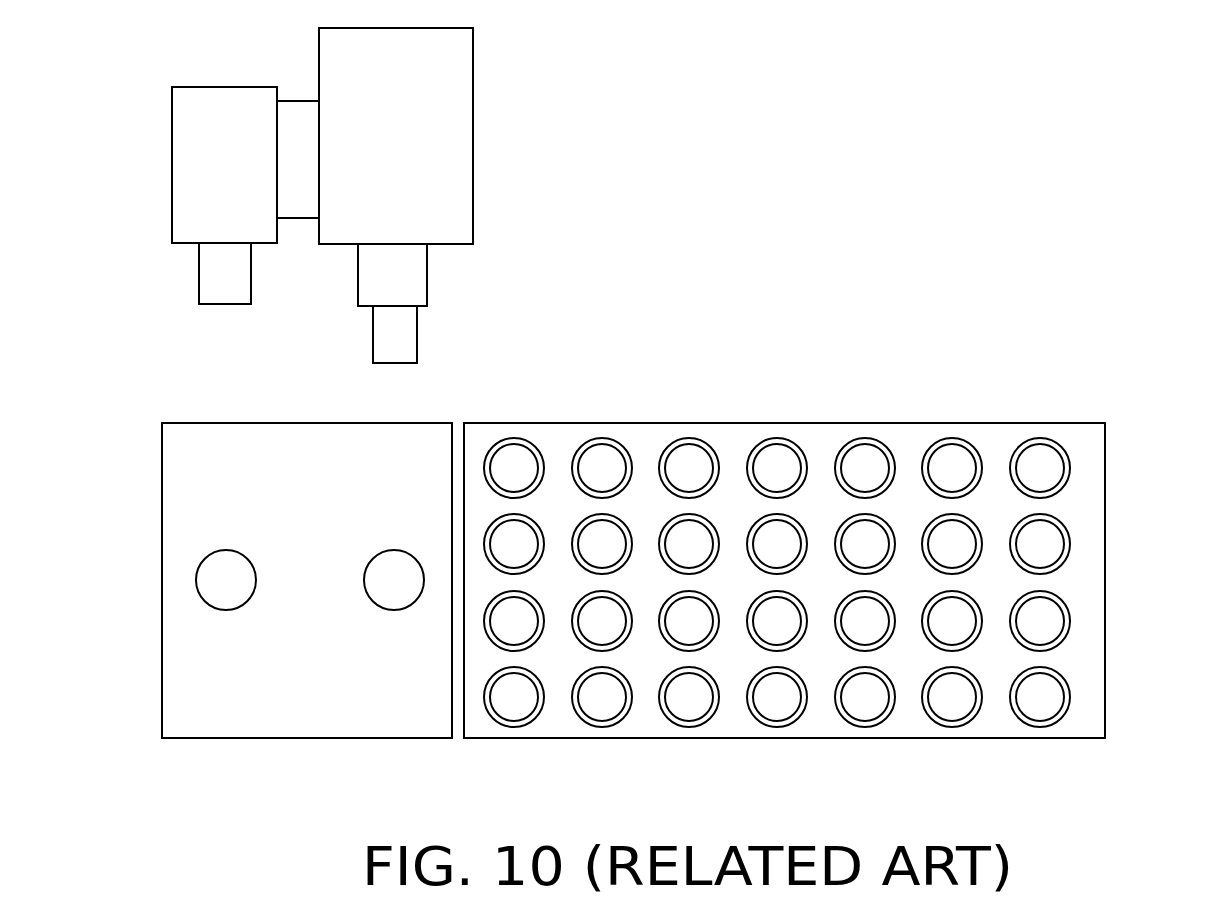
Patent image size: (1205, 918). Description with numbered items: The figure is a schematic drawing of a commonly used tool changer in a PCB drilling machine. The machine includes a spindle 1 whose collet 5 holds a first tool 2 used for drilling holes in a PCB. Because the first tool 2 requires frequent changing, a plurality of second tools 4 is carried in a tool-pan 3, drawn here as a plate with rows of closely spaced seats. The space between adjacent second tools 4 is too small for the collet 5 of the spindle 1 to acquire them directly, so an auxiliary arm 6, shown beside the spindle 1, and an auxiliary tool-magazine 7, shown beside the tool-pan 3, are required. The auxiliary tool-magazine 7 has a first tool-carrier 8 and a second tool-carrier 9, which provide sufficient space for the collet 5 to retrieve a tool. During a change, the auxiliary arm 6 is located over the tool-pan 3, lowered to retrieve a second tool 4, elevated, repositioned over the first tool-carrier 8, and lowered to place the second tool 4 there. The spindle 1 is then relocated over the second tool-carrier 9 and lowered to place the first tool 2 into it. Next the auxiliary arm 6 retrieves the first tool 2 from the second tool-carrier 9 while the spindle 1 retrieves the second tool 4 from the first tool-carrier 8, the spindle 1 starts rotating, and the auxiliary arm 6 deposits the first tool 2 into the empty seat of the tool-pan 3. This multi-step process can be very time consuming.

The spindle 1 is at (433, 163).
The first tool 2 is at (403, 340).
The tool-pan 3 is at (1082, 510).
The second tool 4 is at (768, 460).
The collet 5 is at (417, 283).
The auxiliary arm 6 is at (212, 186).
The auxiliary tool-magazine 7 is at (227, 675).
The first tool-carrier 8 is at (380, 553).
The second tool-carrier 9 is at (203, 557).